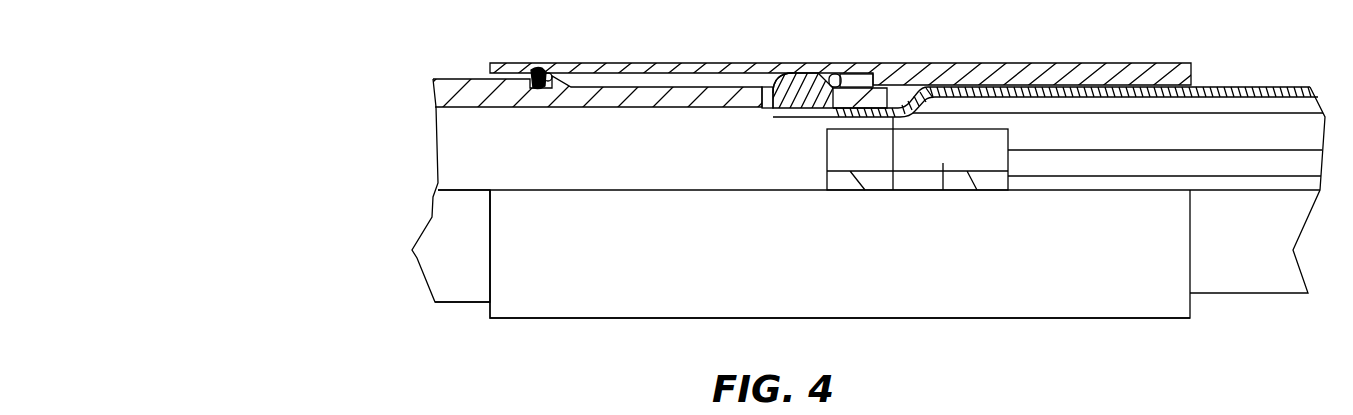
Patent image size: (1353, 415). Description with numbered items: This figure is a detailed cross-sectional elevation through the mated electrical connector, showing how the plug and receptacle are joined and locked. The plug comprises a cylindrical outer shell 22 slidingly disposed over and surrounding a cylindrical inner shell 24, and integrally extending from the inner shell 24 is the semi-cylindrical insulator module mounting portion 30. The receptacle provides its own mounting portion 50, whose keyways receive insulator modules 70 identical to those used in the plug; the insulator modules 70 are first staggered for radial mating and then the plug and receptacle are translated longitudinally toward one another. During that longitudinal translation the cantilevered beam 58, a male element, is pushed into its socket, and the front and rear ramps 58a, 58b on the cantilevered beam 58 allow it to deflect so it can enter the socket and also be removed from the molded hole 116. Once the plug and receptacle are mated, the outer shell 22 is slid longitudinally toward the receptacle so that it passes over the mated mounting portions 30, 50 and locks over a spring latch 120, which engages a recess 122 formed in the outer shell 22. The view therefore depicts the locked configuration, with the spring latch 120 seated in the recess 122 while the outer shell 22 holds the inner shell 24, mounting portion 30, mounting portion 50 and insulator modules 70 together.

The cylindrical outer shell 22 is at (995, 62).
The cylindrical inner shell 24 is at (478, 79).
The insulator module mounting portion 30 is at (447, 302).
The mounting portion 50 is at (1213, 87).
The cantilevered beam 58 is at (808, 72).
The front ramp 58a is at (836, 72).
The rear ramp 58b is at (778, 72).
The insulator module 70 is at (872, 147).
The molded hole 116 is at (768, 78).
The spring latch 120 is at (545, 72).
The recess 122 is at (531, 68).